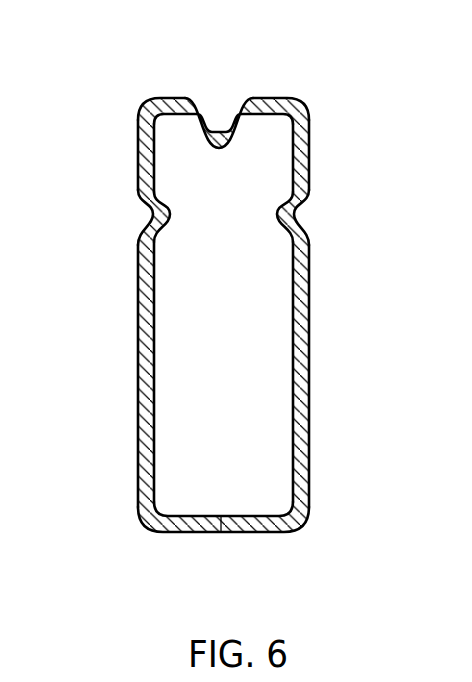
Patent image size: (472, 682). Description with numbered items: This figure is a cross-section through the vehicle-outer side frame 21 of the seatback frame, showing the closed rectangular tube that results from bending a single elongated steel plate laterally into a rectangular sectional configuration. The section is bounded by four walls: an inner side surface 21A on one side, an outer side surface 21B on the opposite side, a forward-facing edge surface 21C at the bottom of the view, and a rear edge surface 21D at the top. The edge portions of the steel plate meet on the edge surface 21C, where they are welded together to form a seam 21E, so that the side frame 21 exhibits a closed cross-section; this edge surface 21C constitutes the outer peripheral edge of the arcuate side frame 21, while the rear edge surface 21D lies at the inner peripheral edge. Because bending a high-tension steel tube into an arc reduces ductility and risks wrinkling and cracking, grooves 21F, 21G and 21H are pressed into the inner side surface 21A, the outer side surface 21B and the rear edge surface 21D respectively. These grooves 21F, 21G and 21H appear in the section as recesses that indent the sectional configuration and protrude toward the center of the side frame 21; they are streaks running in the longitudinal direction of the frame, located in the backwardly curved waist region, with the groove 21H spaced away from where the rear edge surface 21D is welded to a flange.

The side frame 21 is at (233, 312).
The inner side surface 21A is at (148, 332).
The outer side surface 21B is at (300, 333).
The edge surface 21C is at (185, 526).
The rear edge surface 21D is at (275, 108).
The seam 21E is at (221, 531).
The groove 21F is at (153, 213).
The groove 21G is at (293, 213).
The groove 21H is at (223, 130).